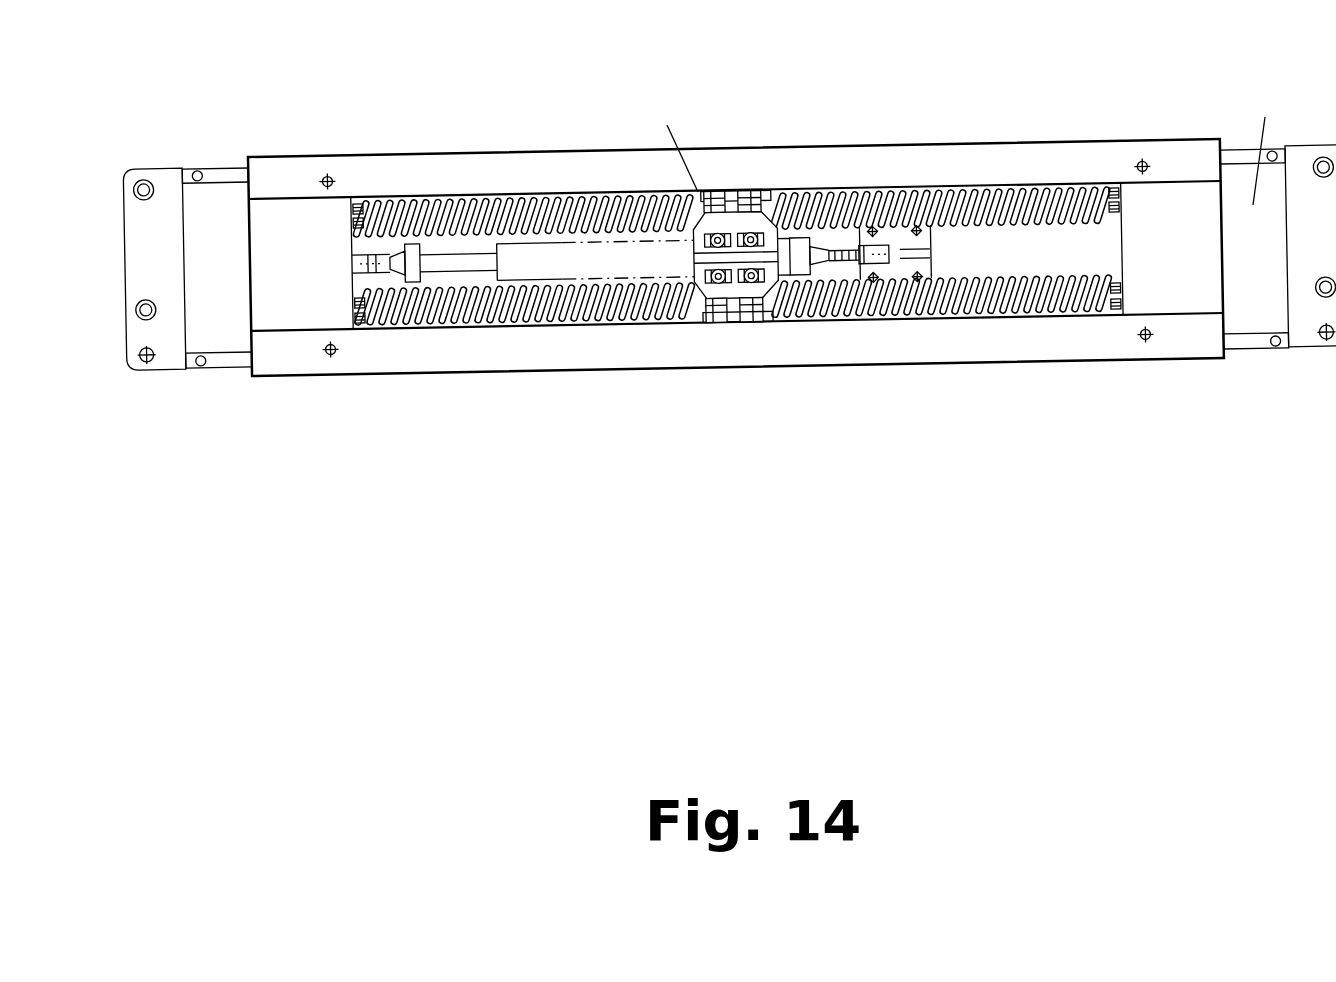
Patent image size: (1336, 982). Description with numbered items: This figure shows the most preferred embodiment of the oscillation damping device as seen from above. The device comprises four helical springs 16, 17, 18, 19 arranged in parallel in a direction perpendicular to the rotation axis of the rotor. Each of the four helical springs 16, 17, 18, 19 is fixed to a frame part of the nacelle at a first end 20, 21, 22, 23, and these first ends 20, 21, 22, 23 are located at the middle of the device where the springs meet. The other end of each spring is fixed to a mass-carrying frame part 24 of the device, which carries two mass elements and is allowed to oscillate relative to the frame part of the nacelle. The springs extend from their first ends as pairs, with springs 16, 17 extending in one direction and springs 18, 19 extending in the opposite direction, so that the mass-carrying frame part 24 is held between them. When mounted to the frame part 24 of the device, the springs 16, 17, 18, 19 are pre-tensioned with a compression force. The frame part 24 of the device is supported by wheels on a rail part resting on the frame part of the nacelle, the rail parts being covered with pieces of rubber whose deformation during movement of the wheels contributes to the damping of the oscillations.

The helical spring 16 is at (552, 327).
The helical spring 17 is at (922, 315).
The helical spring 18 is at (545, 205).
The helical spring 19 is at (955, 203).
The first end 20 is at (718, 327).
The first end 21 is at (758, 327).
The first end 22 is at (718, 192).
The first end 23 is at (753, 192).
The mass-carrying frame part 24 is at (1087, 340).